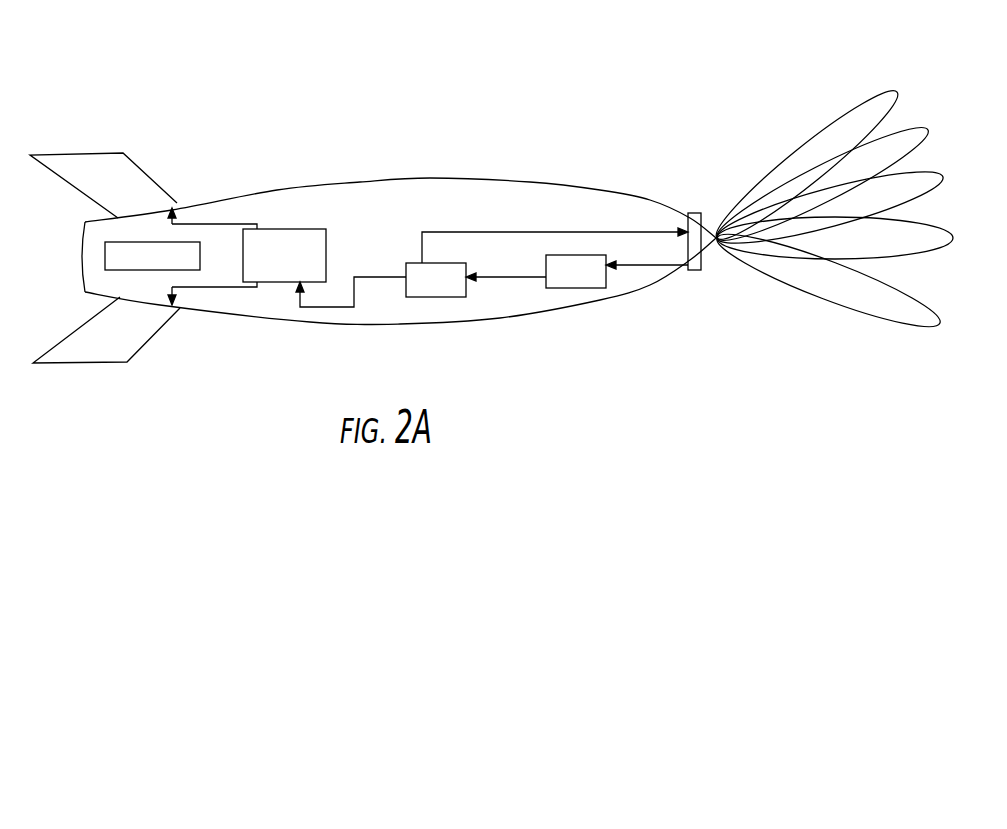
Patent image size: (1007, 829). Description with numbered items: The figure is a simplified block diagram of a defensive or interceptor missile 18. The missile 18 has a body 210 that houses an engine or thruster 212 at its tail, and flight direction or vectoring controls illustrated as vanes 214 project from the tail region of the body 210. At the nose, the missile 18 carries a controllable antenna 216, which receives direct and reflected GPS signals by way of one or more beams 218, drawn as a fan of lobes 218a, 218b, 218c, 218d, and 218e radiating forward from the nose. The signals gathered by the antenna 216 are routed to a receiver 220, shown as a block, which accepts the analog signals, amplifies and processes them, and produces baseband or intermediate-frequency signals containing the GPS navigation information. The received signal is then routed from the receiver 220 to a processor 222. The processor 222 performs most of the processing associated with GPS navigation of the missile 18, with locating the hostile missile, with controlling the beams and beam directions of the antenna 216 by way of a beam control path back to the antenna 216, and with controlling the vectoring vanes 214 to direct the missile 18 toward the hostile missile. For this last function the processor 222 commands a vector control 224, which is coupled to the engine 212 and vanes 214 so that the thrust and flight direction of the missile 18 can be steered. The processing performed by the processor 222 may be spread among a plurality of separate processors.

The defensive missile 18 is at (396, 373).
The body 210 is at (310, 322).
The engine 212 is at (162, 271).
The vanes 214 is at (143, 348).
The controllable antenna 216 is at (694, 213).
The beams 218 is at (904, 63).
The beam 218a is at (862, 105).
The beam 218b is at (933, 120).
The beam 218c is at (945, 177).
The beam 218d is at (955, 237).
The beam 218e is at (935, 320).
The receiver 220 is at (560, 288).
The processor 222 is at (430, 297).
The vector control 224 is at (313, 229).